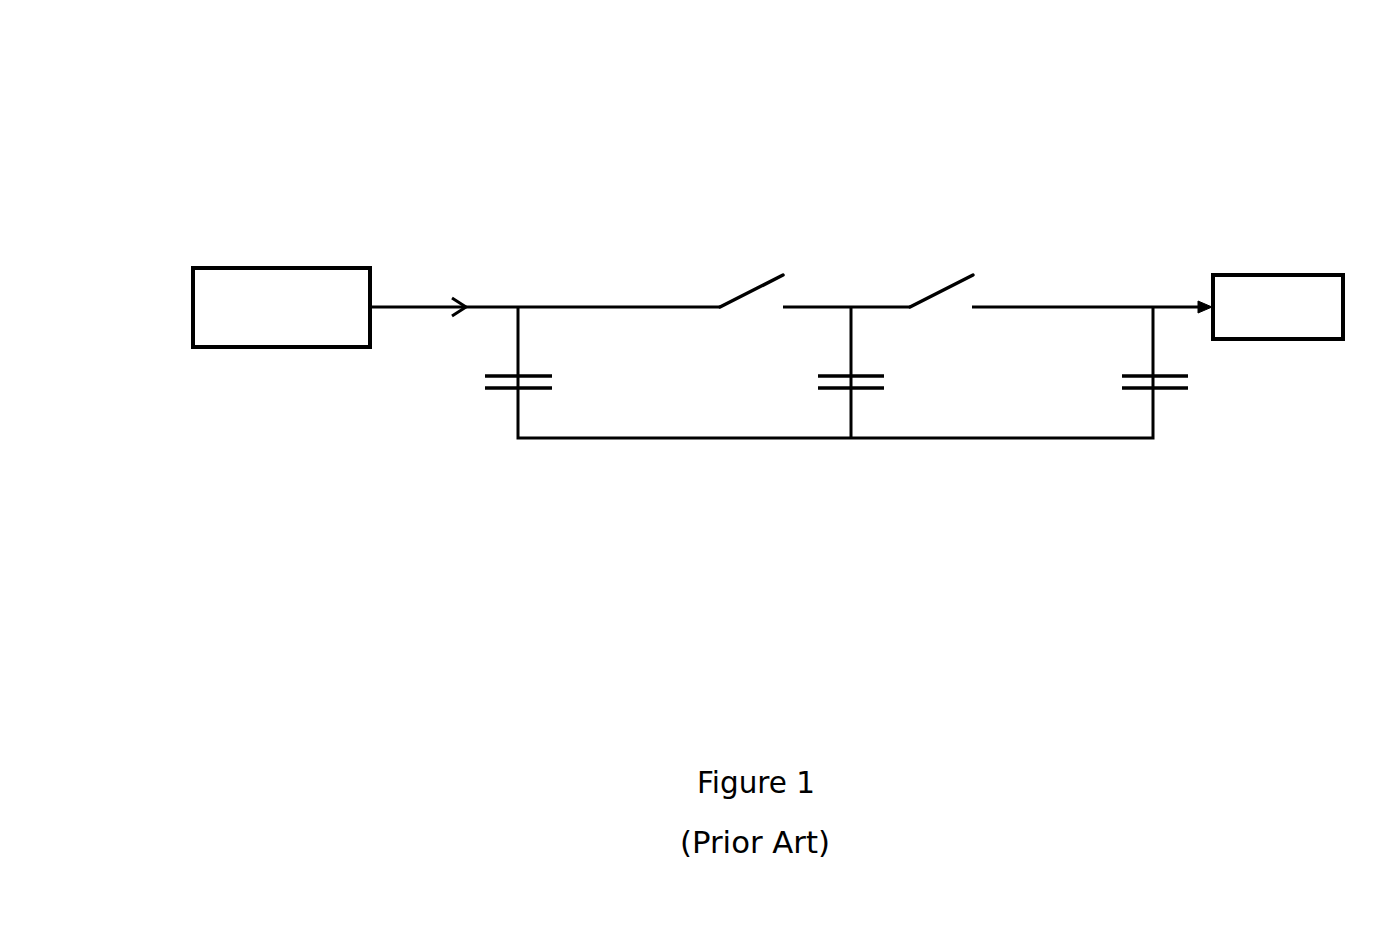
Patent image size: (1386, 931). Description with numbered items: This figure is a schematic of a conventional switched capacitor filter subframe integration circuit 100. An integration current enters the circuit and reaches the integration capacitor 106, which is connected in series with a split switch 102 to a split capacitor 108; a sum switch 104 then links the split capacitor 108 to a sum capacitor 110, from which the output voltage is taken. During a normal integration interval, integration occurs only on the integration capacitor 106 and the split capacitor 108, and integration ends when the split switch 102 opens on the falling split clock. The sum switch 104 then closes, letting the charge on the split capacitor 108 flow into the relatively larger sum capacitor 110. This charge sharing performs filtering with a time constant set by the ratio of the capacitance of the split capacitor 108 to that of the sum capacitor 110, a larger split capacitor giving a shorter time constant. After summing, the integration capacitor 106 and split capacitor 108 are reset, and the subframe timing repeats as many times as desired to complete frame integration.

The switched capacitor filter subframe integration circuit 100 is at (538, 147).
The split switch 102 is at (751, 275).
The sum switch 104 is at (958, 275).
The integration capacitor 106 is at (482, 384).
The split capacitor 108 is at (813, 384).
The sum capacitor 110 is at (1118, 384).